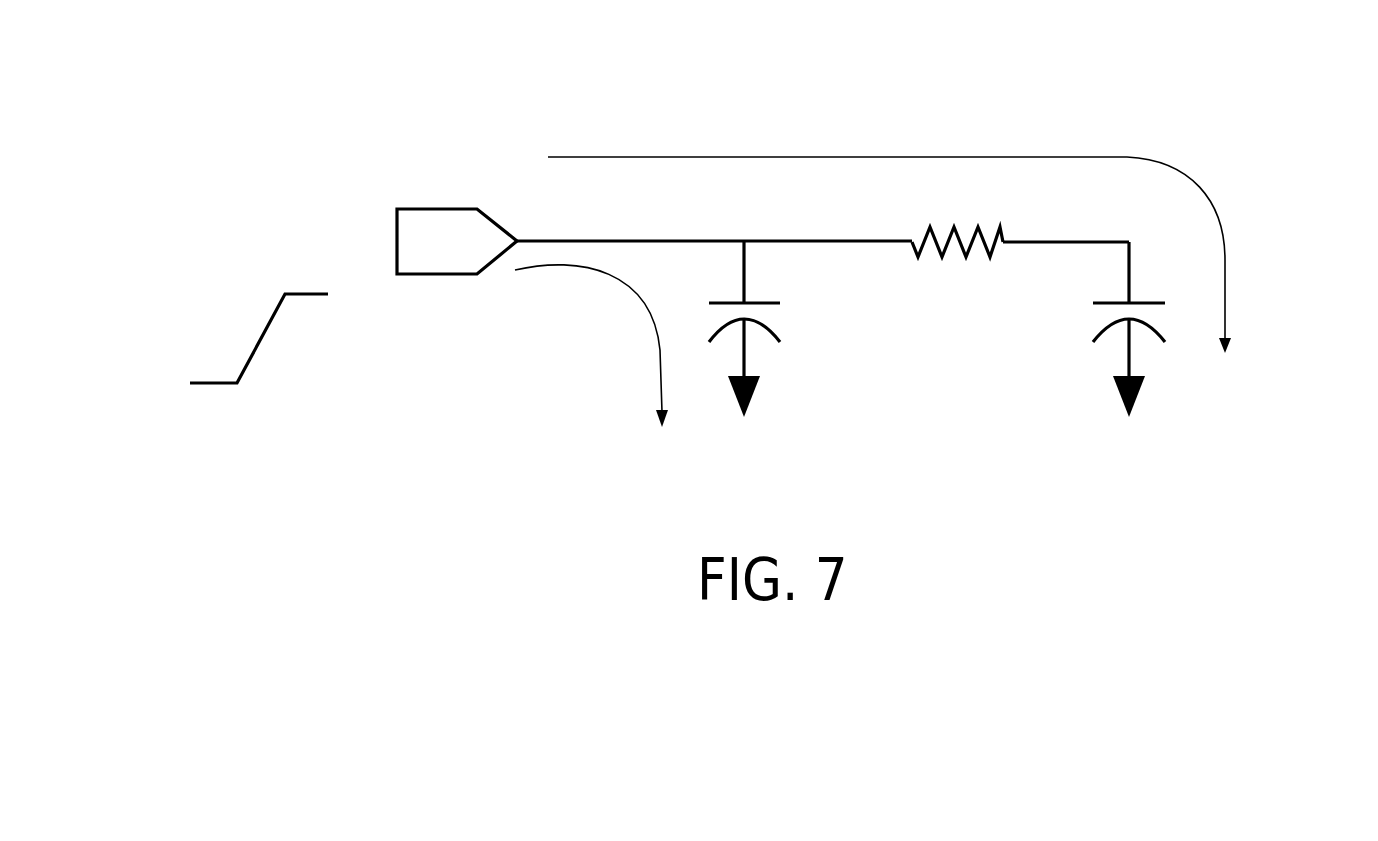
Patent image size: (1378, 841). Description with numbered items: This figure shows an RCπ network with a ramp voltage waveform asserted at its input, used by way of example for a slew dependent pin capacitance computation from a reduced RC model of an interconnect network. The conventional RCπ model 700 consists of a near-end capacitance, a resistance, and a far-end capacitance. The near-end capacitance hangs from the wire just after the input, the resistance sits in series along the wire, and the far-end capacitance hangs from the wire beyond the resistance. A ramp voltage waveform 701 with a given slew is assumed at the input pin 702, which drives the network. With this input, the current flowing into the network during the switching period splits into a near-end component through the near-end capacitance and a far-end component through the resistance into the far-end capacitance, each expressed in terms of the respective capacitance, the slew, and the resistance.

The RCπ model 700 is at (1277, 131).
The ramp voltage waveform 701 is at (312, 294).
The input pin 702 is at (437, 209).